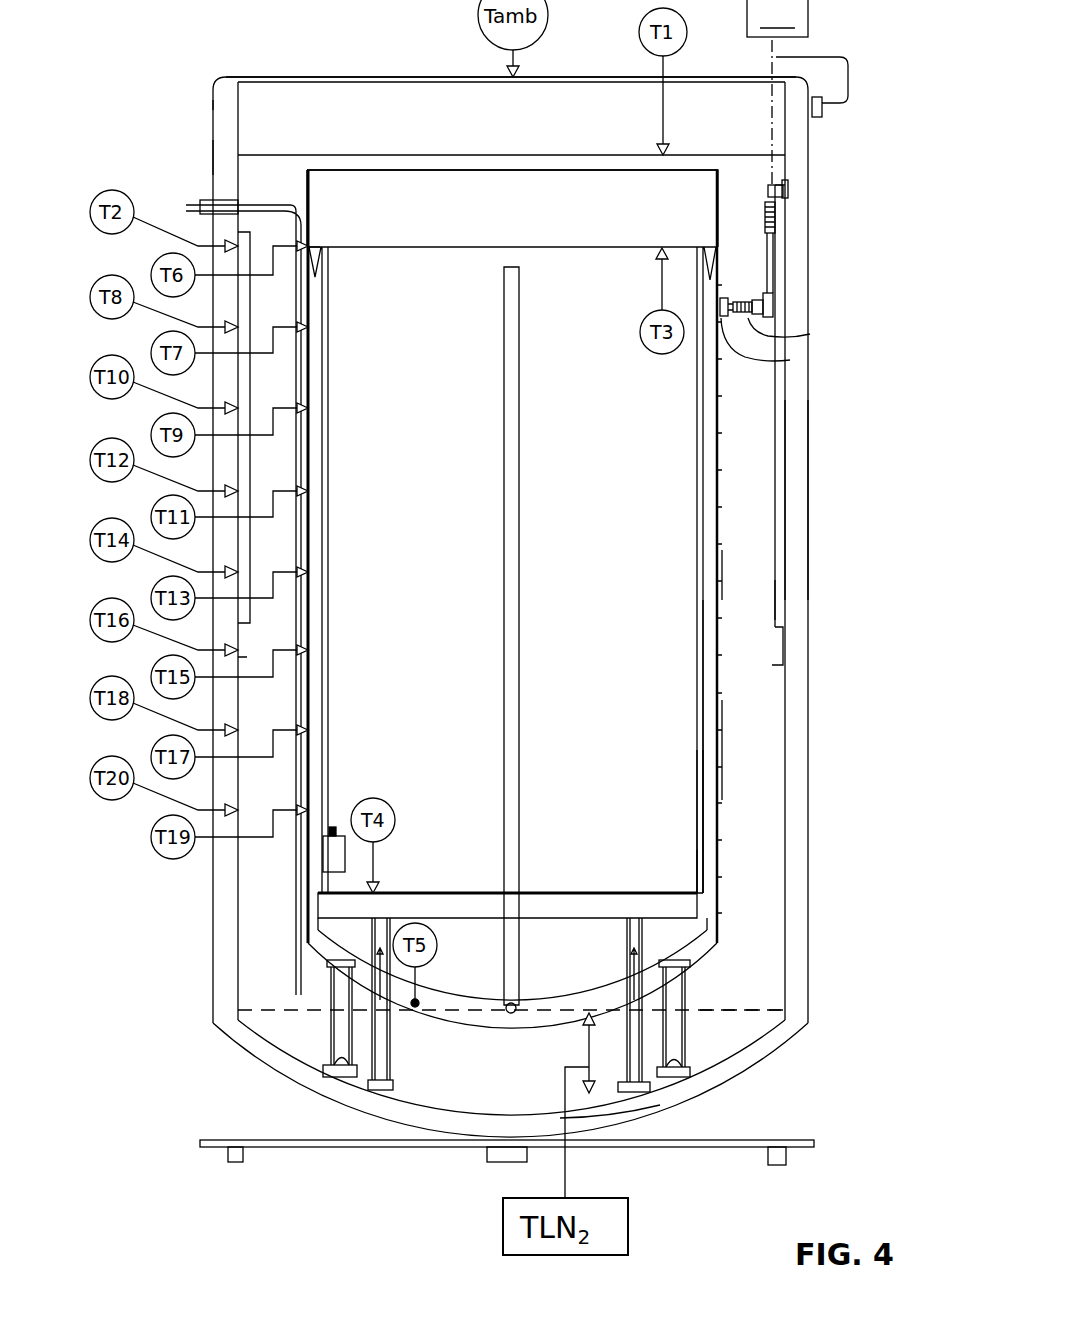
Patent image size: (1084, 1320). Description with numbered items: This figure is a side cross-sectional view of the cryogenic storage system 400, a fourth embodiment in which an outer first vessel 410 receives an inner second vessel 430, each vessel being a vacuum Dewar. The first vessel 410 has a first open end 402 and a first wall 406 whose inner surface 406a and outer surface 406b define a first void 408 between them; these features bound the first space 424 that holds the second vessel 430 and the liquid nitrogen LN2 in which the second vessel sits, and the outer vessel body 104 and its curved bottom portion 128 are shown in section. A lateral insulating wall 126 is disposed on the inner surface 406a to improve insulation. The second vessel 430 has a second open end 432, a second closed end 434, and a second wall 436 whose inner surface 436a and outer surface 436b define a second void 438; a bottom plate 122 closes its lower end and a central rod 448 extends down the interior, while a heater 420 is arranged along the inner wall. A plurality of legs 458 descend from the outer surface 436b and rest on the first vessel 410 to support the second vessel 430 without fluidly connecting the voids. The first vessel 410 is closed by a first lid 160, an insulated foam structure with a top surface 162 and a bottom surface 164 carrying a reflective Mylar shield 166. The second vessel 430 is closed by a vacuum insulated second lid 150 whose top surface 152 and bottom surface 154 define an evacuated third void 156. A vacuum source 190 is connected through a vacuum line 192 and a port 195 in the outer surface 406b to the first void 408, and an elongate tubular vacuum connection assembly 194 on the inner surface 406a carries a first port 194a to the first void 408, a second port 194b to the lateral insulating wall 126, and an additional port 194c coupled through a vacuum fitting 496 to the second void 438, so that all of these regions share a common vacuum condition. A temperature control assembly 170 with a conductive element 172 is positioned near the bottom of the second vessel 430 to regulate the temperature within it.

The cryogenic storage system 400 is at (116, 37).
The outer vessel 104 is at (447, 1118).
The gettering material 128 is at (607, 1097).
The bottom plate 122 is at (545, 908).
The lateral insulating wall 126 is at (780, 410).
The second lid 150 is at (518, 216).
The top surface 152 is at (357, 172).
The bottom surface 154 is at (375, 244).
The third void 156 is at (450, 232).
The first lid 160 is at (505, 132).
The top surface 162 is at (294, 80).
The bottom surface 164 is at (335, 155).
The reflective Mylar shield 166 is at (275, 155).
The temperature control assembly 170 is at (333, 826).
The conductive element 172 is at (433, 1000).
The vacuum source 190 is at (777, 18).
The vacuum line 192 is at (846, 58).
The vacuum connection assembly 194 is at (780, 222).
The first port 194a is at (790, 190).
The second port 194b is at (775, 300).
The additional port 194c is at (780, 360).
The port 195 is at (823, 113).
The first open end 402 is at (758, 175).
The first wall 406 is at (808, 600).
The inner surface 406a is at (786, 500).
The outer surface 406b is at (812, 520).
The first void 408 is at (800, 637).
The first vessel 410 is at (830, 465).
The heater 420 is at (325, 540).
The first space 424 is at (752, 765).
The second vessel 430 is at (740, 577).
The second open end 432 is at (632, 252).
The second closed end 434 is at (670, 944).
The second wall 436 is at (720, 832).
The inner surface 436a is at (700, 870).
The outer surface 436b is at (717, 793).
The second void 438 is at (710, 708).
The central rod 448 is at (520, 512).
The legs 458 is at (327, 1035).
The vacuum fitting 496 is at (740, 340).
The liquid nitrogen LN2 is at (740, 1028).